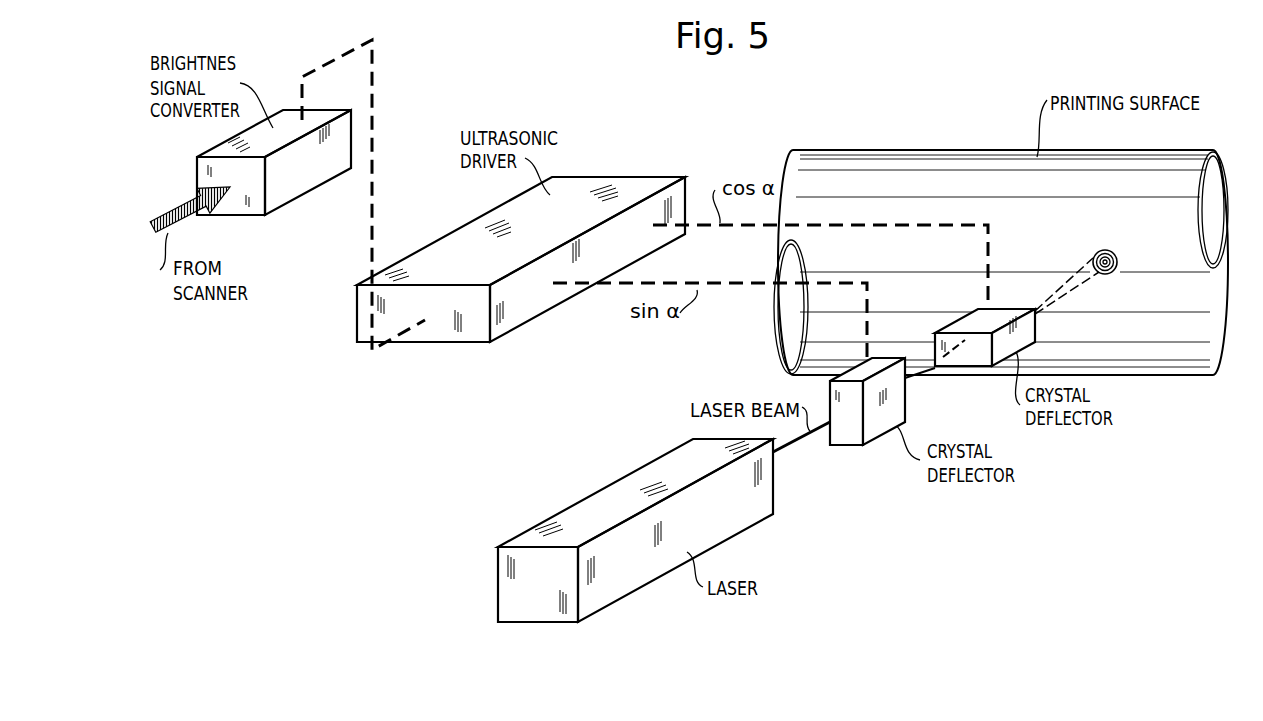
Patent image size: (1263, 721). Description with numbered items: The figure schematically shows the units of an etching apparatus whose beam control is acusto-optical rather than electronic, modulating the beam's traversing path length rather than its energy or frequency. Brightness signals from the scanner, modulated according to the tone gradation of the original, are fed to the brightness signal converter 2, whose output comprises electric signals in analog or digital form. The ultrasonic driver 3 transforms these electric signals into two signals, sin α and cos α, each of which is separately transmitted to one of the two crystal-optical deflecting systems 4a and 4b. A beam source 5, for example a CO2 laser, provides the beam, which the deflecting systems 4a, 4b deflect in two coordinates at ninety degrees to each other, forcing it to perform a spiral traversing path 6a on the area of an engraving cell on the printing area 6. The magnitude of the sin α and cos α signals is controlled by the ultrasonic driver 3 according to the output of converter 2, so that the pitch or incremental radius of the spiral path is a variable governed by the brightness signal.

The brightness signal converter 2 is at (310, 175).
The ultrasonic driving device 3 is at (550, 293).
The crystal-optical deflecting system 4a is at (847, 435).
The crystal-optical deflecting system 4b is at (967, 320).
The beam source 5 is at (593, 508).
The printing area 6 is at (995, 168).
The spiral traversing path 6a is at (1117, 243).